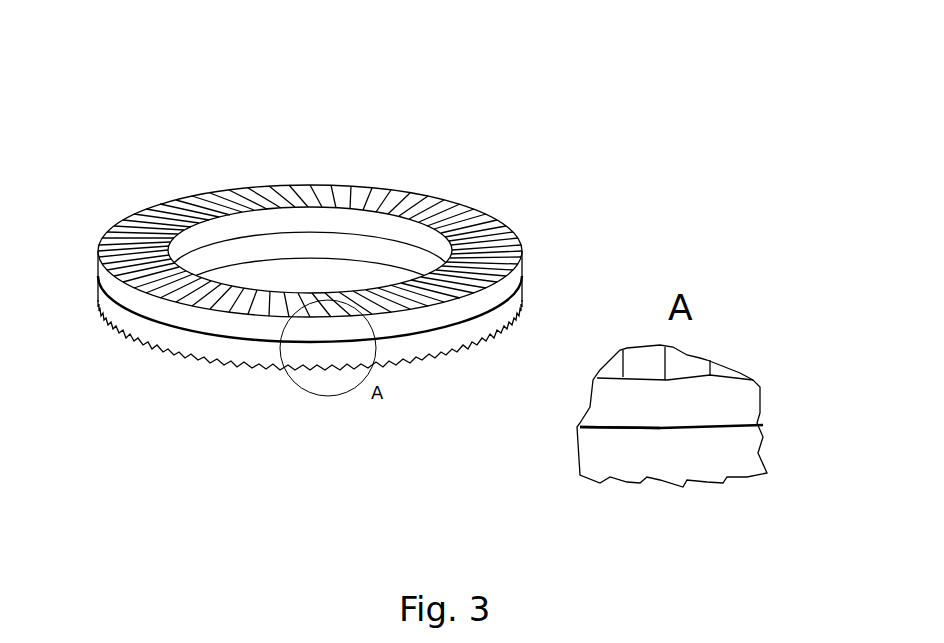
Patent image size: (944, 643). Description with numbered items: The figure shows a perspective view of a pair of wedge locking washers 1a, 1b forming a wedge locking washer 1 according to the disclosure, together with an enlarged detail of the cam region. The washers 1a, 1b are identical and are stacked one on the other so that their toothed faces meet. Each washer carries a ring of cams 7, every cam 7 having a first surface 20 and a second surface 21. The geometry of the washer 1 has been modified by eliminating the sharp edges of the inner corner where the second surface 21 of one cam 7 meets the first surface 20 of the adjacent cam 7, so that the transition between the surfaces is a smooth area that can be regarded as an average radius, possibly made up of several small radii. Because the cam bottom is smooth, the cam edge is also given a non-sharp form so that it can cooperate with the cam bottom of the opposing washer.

The wedge locking washer 1 is at (412, 210).
The wedge locking washer 1a is at (495, 290).
The wedge locking washer 1b is at (487, 317).
The cam 7 is at (733, 437).
The first surface 20 is at (707, 430).
The second surface 21 is at (660, 430).